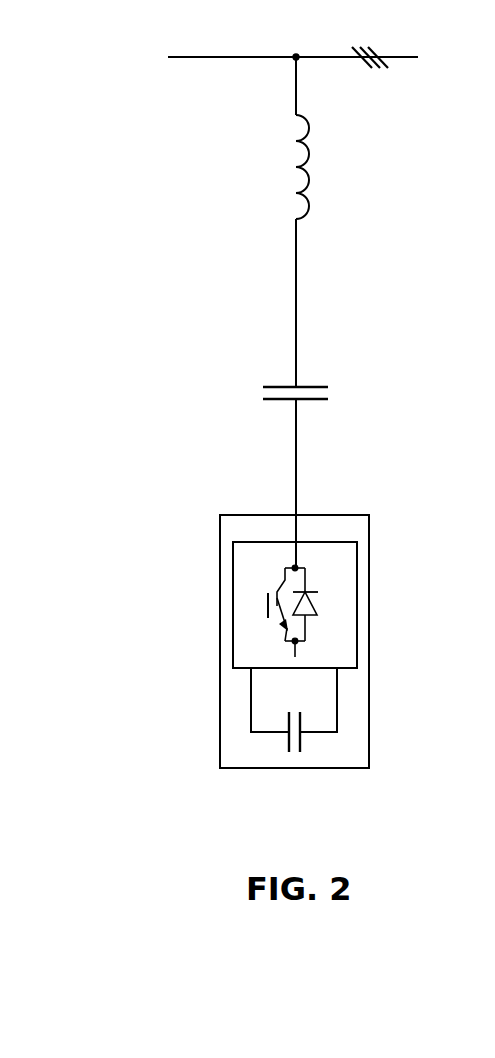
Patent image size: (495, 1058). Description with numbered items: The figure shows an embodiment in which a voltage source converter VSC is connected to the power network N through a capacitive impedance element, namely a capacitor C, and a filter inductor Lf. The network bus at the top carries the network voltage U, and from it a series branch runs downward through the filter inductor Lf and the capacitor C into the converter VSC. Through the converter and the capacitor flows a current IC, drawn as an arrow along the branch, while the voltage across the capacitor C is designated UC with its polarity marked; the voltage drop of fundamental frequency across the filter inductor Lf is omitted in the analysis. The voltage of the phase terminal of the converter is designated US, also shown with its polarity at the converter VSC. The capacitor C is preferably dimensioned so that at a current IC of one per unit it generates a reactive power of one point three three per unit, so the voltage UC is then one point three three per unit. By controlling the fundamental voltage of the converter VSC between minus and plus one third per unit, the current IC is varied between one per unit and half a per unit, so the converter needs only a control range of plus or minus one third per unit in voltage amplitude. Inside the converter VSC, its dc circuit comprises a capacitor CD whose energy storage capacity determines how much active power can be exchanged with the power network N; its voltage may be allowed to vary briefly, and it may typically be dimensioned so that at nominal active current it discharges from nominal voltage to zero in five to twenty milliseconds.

The power network N is at (218, 58).
The network voltage U is at (369, 60).
The filter inductor Lf is at (312, 170).
The current IC is at (283, 278).
The voltage across the capacitor UC is at (236, 432).
The capacitor C is at (316, 400).
The voltage of the phase terminal of the converter US is at (201, 679).
The voltage source converter VSC is at (369, 705).
The capacitor CD is at (286, 746).